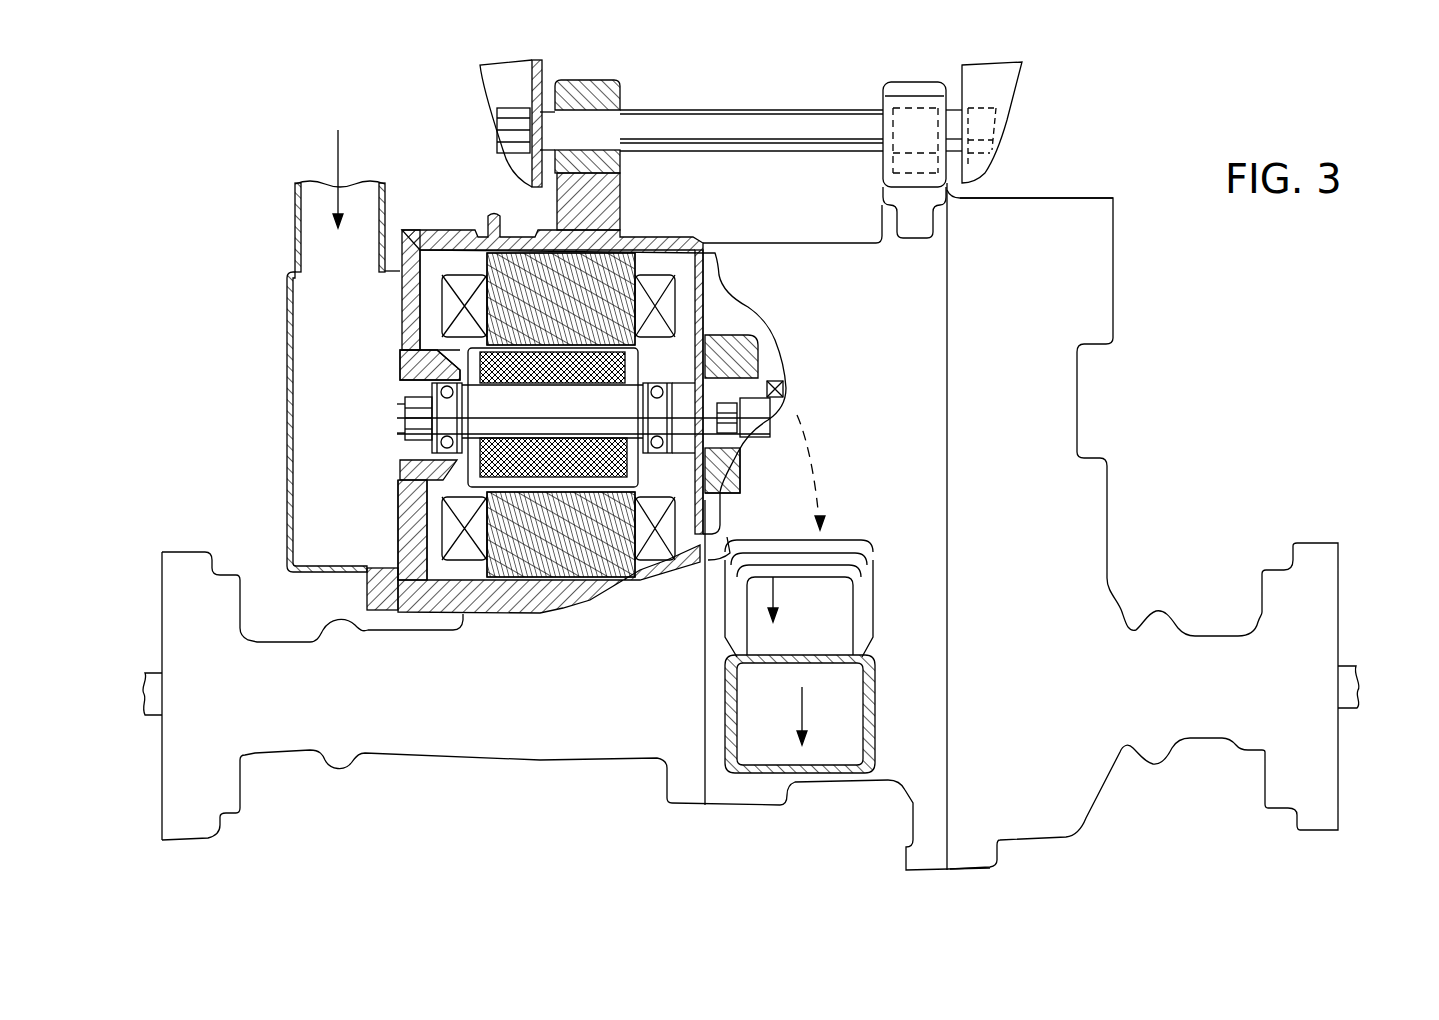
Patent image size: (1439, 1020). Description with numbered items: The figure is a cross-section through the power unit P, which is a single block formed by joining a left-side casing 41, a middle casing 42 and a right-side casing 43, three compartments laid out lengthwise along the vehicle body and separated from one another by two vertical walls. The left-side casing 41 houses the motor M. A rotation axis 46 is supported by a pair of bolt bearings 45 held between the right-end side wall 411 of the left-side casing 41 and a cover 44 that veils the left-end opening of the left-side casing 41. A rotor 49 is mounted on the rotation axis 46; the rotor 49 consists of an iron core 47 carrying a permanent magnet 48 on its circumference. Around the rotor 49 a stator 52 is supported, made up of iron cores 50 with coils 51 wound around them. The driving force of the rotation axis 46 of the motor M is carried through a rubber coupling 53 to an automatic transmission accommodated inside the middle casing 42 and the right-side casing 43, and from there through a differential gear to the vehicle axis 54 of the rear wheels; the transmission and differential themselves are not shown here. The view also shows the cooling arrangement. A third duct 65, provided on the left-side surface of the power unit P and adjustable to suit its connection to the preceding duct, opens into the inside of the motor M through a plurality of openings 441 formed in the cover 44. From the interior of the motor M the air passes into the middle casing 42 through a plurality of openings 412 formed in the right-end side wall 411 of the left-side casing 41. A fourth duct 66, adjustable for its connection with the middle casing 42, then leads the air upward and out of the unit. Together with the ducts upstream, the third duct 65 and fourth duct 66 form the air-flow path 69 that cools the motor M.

The left-side casing 41 is at (470, 236).
The right-end side wall of the left-side casing 411 is at (452, 313).
The openings formed on the right-end side wall 412 is at (633, 297).
The middle casing 42 is at (797, 246).
The right-side casing 43 is at (1076, 200).
The cover 44 is at (393, 606).
The openings formed on the cover 441 is at (425, 531).
The bolt bearings 45 is at (417, 453).
The rotation axis 46 is at (487, 418).
The iron core 47 is at (483, 368).
The permanent magnet 48 is at (468, 346).
The rotor 49 is at (398, 321).
The iron cores 50 is at (480, 597).
The coils 51 is at (482, 652).
The stator 52 is at (583, 480).
The rubber coupling 53 is at (790, 354).
The vehicle axis 54 is at (142, 678).
The third duct 65 is at (295, 241).
The fourth duct 66 is at (875, 712).
The air-flow path 69 is at (270, 314).
The motor M is at (636, 615).
The power unit P is at (1120, 493).